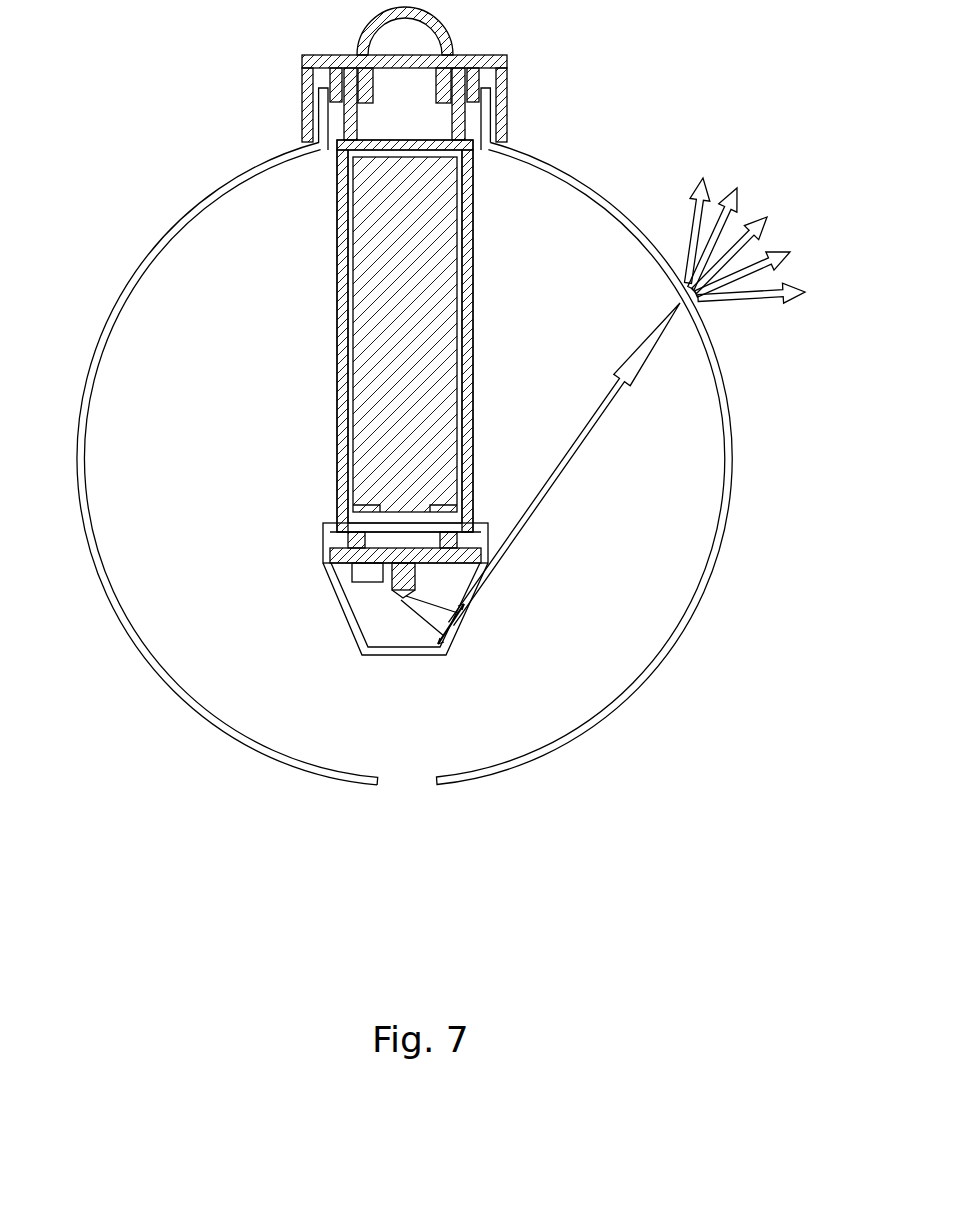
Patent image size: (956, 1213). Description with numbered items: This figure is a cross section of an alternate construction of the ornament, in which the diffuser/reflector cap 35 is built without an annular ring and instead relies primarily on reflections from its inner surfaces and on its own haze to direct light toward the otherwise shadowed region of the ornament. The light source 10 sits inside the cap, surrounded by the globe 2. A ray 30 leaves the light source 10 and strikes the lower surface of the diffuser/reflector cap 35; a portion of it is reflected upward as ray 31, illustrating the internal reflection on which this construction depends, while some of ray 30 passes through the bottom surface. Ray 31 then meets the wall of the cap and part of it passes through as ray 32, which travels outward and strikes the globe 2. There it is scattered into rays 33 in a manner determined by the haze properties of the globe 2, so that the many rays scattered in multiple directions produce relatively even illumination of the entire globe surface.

The globe 2 is at (730, 475).
The light source 10 is at (407, 585).
The ray 30 is at (421, 655).
The ray 31 is at (455, 645).
The ray 32 is at (556, 495).
The rays 33 is at (695, 233).
The diffuser/reflector cap 35 is at (403, 600).